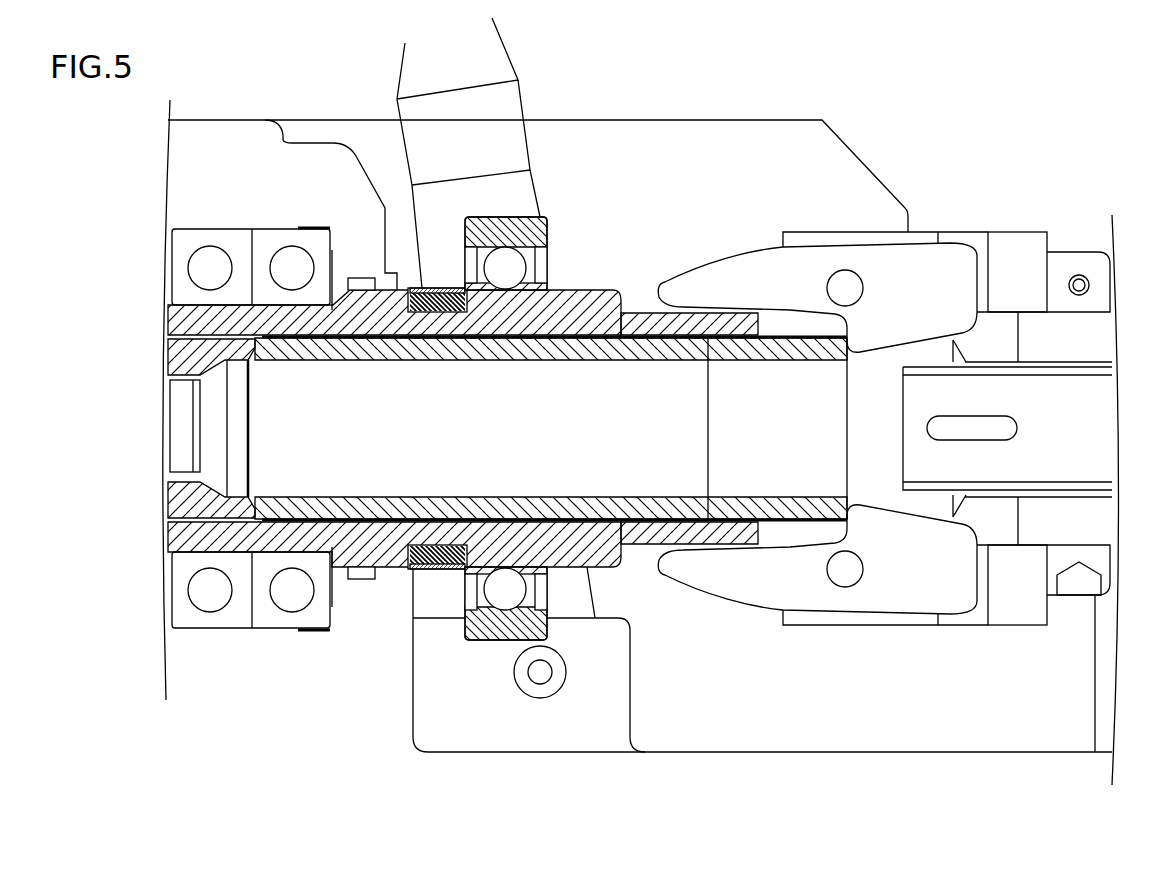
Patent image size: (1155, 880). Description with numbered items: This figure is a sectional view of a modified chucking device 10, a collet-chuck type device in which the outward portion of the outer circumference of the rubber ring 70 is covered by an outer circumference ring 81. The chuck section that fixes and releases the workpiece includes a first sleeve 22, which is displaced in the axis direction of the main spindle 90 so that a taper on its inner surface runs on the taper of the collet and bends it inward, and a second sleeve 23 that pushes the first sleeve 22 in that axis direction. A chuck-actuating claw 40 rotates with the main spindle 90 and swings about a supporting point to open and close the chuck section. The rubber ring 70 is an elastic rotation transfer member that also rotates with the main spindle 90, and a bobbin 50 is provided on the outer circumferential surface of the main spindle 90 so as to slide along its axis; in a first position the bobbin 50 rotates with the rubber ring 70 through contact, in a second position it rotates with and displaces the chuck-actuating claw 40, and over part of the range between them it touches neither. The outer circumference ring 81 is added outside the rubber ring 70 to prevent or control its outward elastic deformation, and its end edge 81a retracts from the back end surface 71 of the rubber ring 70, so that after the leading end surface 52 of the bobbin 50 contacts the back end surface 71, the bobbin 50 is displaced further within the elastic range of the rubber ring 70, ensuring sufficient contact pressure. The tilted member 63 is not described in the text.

The chucking device 10 is at (874, 93).
The first sleeve 22 is at (222, 507).
The second sleeve 23 is at (360, 505).
The chuck-actuating claw 40 is at (955, 250).
The bobbin 50 is at (547, 229).
The leading end surface 52 is at (467, 303).
The lever 63 is at (480, 50).
The rubber ring 70 is at (412, 288).
The back end surface 71 is at (456, 300).
The outer circumference ring 81 is at (428, 288).
The end edge 81a is at (466, 290).
The main spindle 90 is at (647, 316).